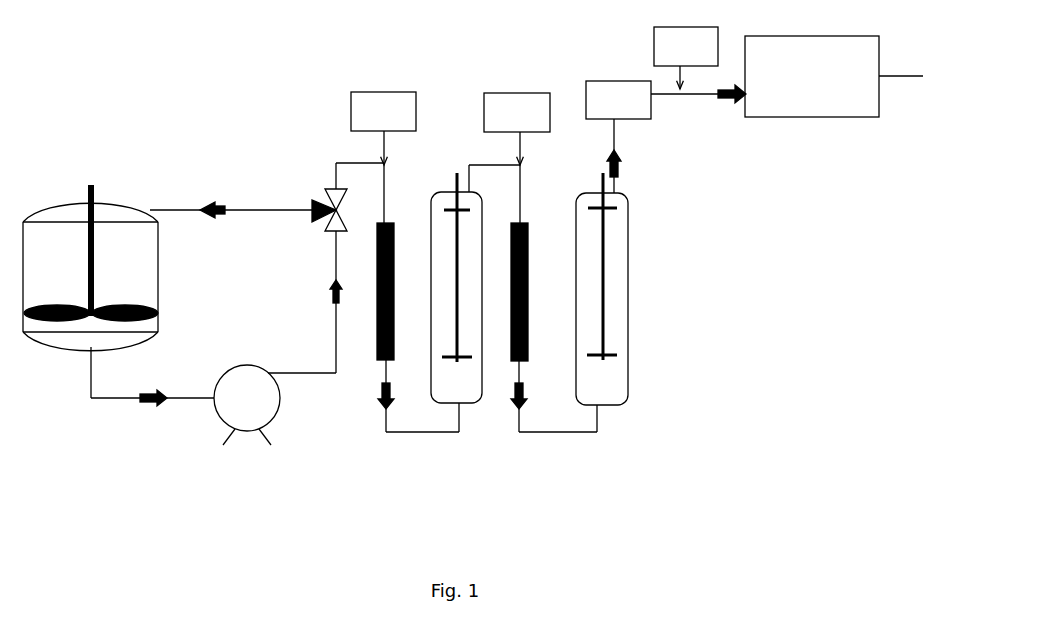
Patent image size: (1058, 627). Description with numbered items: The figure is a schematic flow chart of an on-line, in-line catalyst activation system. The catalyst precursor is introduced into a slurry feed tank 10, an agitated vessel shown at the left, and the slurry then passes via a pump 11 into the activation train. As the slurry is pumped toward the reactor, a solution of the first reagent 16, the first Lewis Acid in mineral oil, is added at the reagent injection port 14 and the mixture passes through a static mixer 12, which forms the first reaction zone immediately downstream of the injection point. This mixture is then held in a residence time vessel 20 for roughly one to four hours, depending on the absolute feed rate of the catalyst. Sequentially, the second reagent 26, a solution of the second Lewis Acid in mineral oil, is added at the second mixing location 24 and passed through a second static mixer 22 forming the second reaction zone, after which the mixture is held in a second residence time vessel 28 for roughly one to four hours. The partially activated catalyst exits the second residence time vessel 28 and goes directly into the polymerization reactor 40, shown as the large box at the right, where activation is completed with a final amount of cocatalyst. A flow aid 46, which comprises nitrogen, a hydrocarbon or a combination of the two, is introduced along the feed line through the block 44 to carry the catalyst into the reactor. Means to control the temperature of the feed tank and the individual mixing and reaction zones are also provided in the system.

The slurry feed tank 10 is at (107, 201).
The pump 11 is at (238, 368).
The static mixer 12 is at (373, 363).
The reagent injection port 14 is at (366, 90).
The first reagent 16 is at (372, 87).
The residence time vessel 20 is at (446, 190).
The second static mixer 22 is at (507, 366).
The second mixing location 24 is at (514, 92).
The second reagent 26 is at (517, 85).
The second residence time vessel 28 is at (632, 311).
The polymerization reactor 40 is at (823, 120).
The outlet control unit 44 is at (618, 100).
The flow aid 46 is at (686, 46).